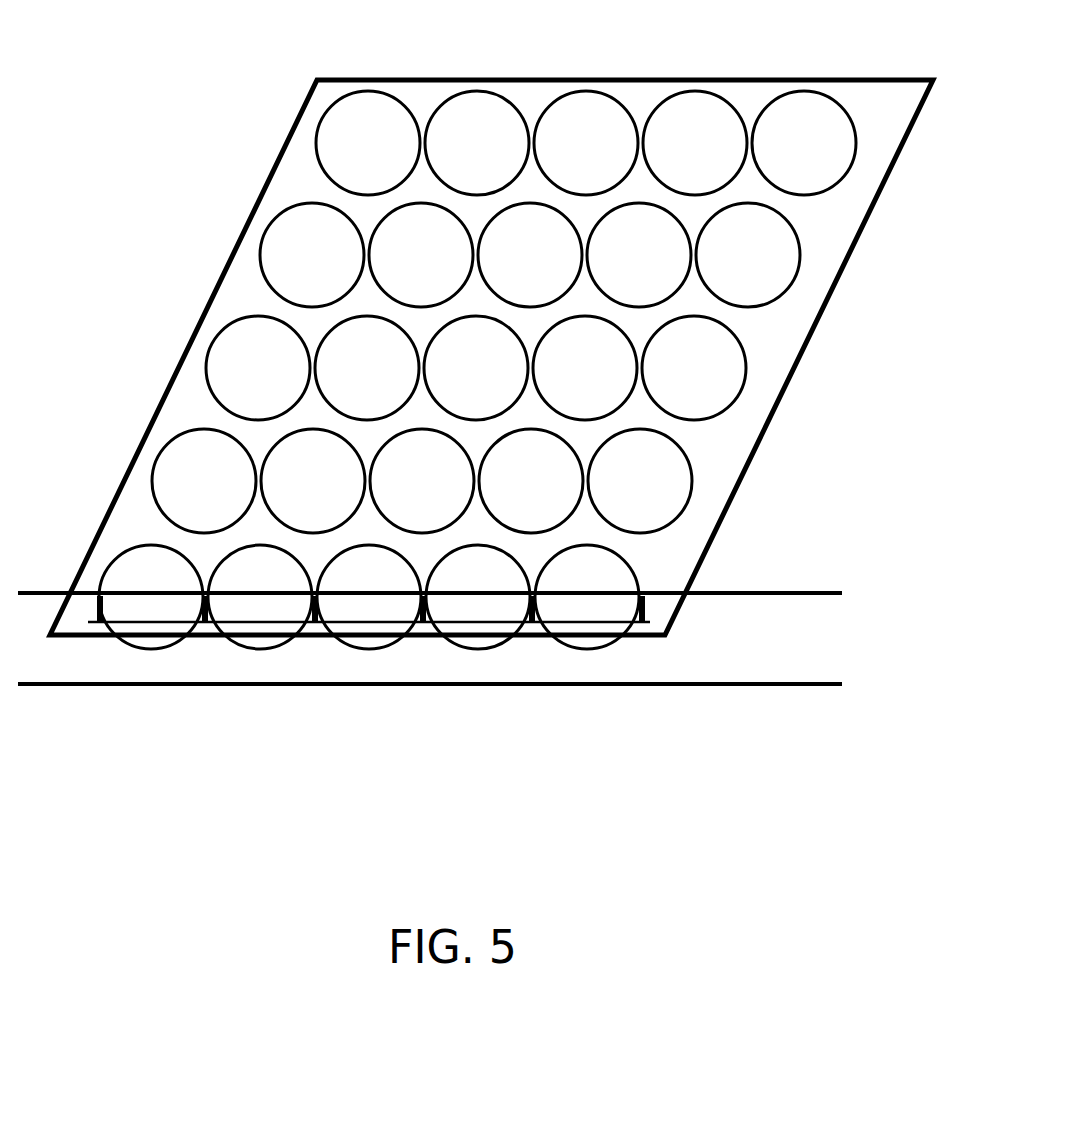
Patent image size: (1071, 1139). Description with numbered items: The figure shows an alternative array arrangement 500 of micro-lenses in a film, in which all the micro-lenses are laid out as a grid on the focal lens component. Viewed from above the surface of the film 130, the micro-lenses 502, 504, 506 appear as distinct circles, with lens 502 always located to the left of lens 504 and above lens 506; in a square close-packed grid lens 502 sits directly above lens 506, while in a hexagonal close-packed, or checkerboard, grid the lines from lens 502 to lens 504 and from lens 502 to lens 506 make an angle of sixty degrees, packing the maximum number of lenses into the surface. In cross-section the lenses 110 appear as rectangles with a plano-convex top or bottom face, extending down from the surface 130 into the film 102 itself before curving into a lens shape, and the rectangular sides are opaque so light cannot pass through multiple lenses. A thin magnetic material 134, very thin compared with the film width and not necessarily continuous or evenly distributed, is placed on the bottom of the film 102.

The array arrangement 500 is at (660, 80).
The lens 502 is at (377, 114).
The lens 504 is at (483, 122).
The lens 506 is at (278, 248).
The film 102 is at (125, 672).
The lenses 110 is at (363, 624).
The surface of the film 130 is at (763, 598).
The magnetic material 134 is at (483, 687).